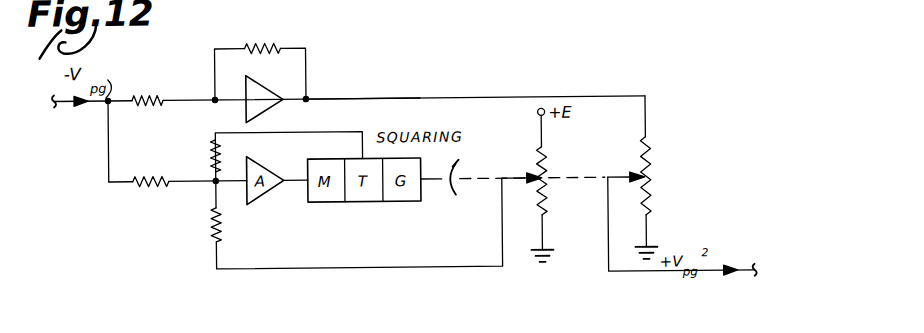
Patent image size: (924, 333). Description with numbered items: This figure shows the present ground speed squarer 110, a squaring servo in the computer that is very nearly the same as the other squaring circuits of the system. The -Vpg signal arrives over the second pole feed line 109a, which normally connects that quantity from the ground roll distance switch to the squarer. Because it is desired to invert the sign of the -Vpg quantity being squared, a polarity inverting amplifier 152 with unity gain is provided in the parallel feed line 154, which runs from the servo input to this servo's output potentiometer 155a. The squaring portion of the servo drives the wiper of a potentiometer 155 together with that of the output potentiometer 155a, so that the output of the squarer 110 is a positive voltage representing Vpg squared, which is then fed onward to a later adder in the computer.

The second pole feed line 109a is at (66, 107).
The present ground speed squarer 110 is at (507, 57).
The polarity inverting amplifier 152 is at (294, 78).
The parallel feed line 154 is at (358, 102).
The potentiometer 155 is at (546, 156).
The output potentiometer 155a is at (651, 153).